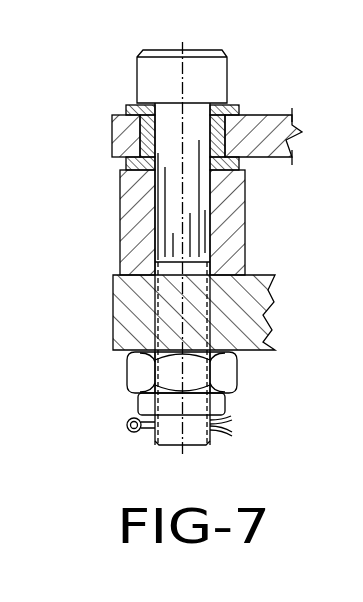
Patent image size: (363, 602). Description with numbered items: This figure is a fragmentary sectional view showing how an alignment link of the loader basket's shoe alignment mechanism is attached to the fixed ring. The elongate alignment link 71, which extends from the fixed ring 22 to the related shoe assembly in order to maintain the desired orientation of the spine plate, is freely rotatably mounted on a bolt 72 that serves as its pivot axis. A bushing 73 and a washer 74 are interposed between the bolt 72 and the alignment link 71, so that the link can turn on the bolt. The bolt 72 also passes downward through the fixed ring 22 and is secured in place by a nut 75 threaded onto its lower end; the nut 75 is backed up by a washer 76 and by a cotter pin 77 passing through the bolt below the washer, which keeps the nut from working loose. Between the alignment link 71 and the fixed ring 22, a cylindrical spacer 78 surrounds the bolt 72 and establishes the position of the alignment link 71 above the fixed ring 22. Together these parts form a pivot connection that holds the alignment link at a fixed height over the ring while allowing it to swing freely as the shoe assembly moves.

The fixed ring 22 is at (142, 305).
The alignment link 71 is at (263, 137).
The bolt 72 is at (170, 147).
The bushing 73 is at (233, 167).
The washer 74 is at (127, 110).
The nut 75 is at (142, 370).
The washer 76 is at (220, 403).
The cotter pin 77 is at (130, 432).
The cylindrical spacer 78 is at (228, 230).